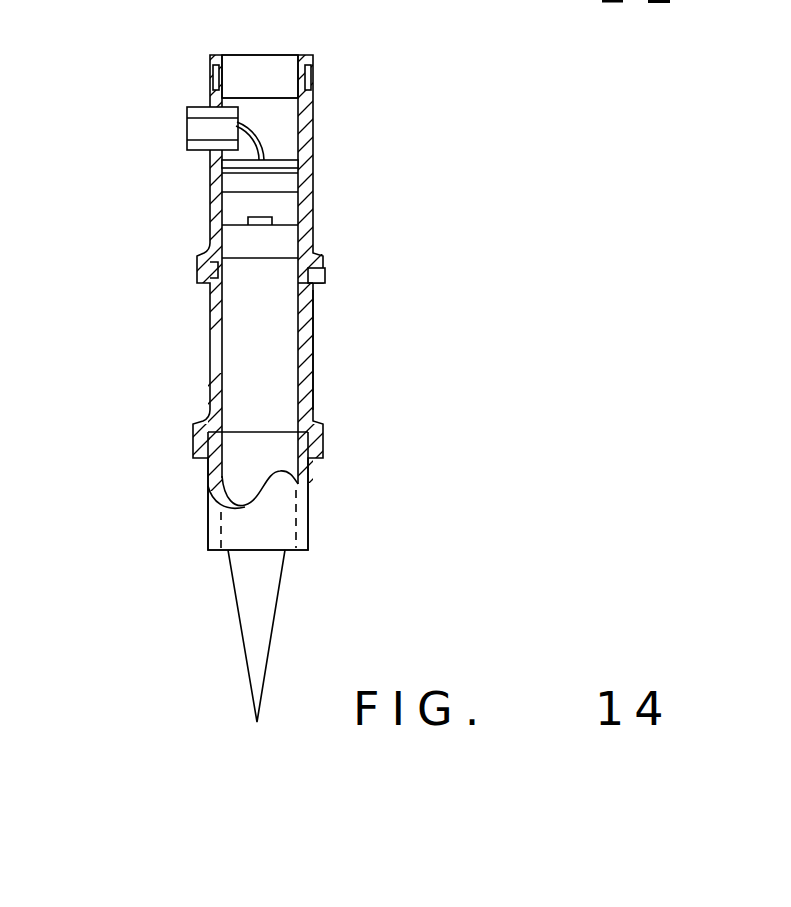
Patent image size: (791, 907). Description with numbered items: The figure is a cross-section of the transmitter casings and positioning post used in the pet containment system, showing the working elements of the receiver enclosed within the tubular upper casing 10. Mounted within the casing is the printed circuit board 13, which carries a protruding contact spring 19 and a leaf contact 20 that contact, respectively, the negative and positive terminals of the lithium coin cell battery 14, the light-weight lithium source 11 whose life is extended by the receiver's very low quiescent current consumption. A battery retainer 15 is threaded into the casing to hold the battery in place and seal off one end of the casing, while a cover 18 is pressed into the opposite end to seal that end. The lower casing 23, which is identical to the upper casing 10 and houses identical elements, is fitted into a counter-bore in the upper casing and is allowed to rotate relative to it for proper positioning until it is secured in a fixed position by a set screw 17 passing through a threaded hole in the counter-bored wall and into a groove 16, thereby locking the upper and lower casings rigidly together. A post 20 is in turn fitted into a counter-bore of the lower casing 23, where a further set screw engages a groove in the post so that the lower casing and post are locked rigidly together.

The tubular upper casing 10 is at (313, 109).
The cover 18 is at (270, 55).
The light-weight lithium source 11 is at (227, 128).
The printed circuit board 13 is at (283, 160).
The leaf contact 20 is at (298, 168).
The contact spring 19 is at (260, 173).
The lithium coin cell battery 14 is at (278, 185).
The battery retainer 15 is at (278, 208).
The set screw 17 is at (325, 273).
The groove 16 is at (316, 288).
The lower casing 23 is at (312, 318).